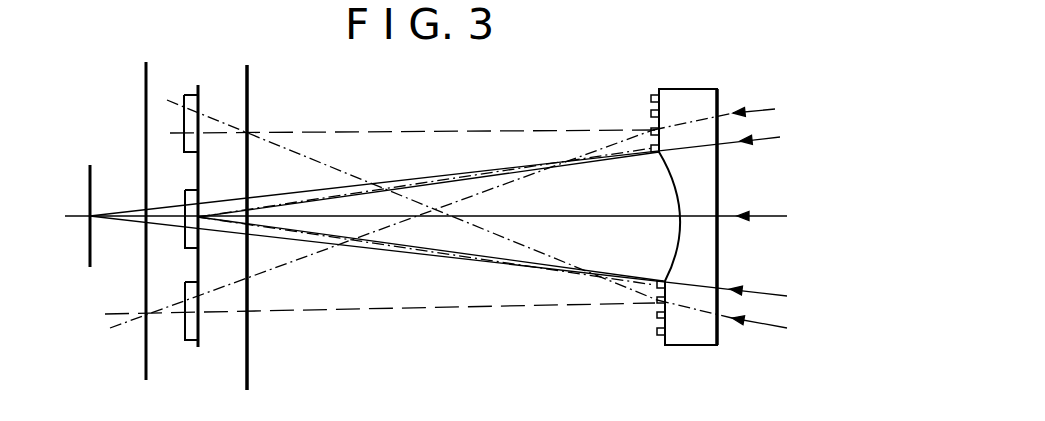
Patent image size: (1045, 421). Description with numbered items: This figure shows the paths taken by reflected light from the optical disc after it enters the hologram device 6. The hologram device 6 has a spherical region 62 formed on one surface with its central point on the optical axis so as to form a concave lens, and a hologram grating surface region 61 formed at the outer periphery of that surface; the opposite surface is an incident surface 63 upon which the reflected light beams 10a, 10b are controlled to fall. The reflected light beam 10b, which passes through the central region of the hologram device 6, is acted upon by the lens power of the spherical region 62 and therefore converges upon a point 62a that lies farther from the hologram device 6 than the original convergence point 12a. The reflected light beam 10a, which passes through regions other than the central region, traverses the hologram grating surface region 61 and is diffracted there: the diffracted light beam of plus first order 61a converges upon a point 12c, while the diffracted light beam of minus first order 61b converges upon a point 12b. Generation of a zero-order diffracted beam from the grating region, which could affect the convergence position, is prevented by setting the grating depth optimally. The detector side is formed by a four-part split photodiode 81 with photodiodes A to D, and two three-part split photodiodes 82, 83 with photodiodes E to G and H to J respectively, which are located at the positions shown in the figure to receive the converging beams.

The hologram device 6 is at (685, 199).
The hologram grating surface region 61 is at (650, 99).
The diffracted light beam of plus first order 61a is at (412, 131).
The diffracted light beam of minus first order 61b is at (397, 311).
The spherical region 62 is at (672, 188).
The convergence point 62a is at (86, 214).
The incident surface 63 is at (720, 189).
The reflected light beam 10a is at (757, 326).
The reflected light beam 10b is at (766, 288).
The original convergence point 12a is at (186, 190).
The convergence point 12b is at (143, 317).
The convergence point 12c is at (250, 127).
The four-part split photodiode 81 is at (185, 240).
The three-part split photodiode 82 is at (186, 95).
The three-part split photodiode 83 is at (193, 333).